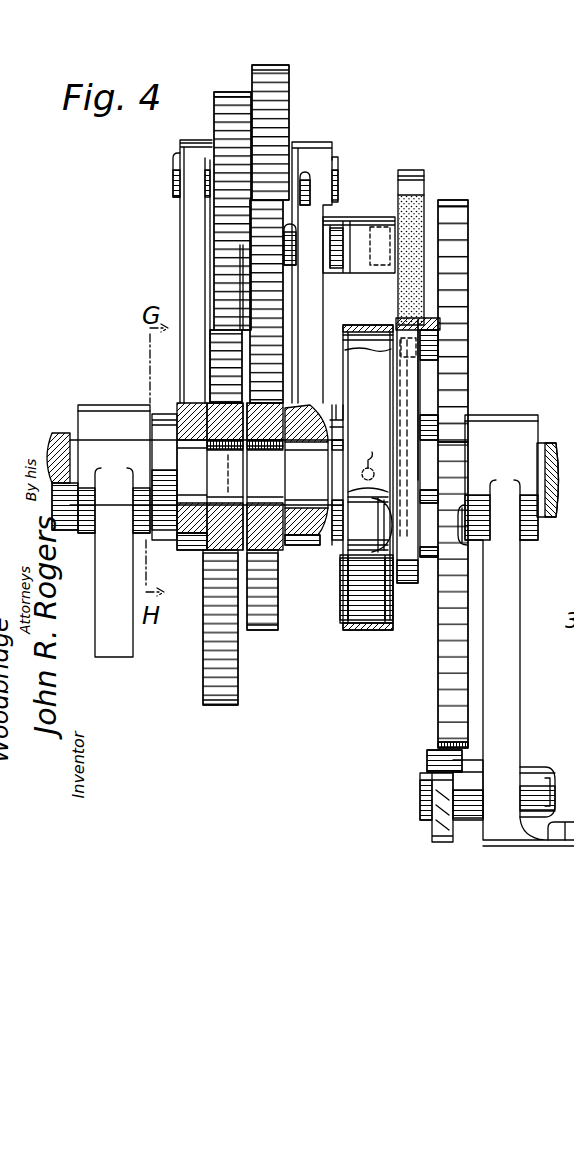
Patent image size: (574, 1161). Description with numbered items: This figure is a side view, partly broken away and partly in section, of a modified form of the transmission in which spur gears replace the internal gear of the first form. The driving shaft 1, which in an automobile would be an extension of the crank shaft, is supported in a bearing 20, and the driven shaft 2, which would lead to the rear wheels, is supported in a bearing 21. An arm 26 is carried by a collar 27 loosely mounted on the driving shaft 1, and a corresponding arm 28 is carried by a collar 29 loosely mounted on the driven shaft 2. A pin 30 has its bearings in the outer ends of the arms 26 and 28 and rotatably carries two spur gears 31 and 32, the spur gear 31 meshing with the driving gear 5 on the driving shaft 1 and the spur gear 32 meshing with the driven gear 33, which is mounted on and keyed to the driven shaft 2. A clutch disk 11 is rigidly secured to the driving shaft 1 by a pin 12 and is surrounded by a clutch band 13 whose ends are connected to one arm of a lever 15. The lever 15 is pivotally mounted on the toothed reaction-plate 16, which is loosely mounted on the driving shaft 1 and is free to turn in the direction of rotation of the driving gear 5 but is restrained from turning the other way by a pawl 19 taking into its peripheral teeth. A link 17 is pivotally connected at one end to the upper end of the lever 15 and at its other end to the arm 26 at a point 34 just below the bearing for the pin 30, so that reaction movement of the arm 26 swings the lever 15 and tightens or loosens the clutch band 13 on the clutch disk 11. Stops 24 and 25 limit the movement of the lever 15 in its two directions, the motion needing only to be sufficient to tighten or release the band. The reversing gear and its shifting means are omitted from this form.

The driving shaft 1 is at (552, 476).
The driven shaft 2 is at (192, 468).
The driving gear 5 is at (272, 613).
The clutch disk 11 is at (360, 628).
The pin 12 is at (373, 456).
The clutch band 13 is at (368, 676).
The lever 15 is at (418, 174).
The reaction-plate 16 is at (466, 262).
The link 17 is at (340, 217).
The pawl 19 is at (432, 766).
The bearing 20 is at (516, 630).
The bearing 21 is at (114, 531).
The stop 24 is at (436, 323).
The stop 25 is at (420, 347).
The arm 26 is at (308, 294).
The collar 27 is at (304, 532).
The arm 28 is at (190, 254).
The collar 29 is at (186, 532).
The pin 30 is at (340, 178).
The spur gear 31 is at (285, 121).
The spur gear 32 is at (226, 99).
The driven gear 33 is at (232, 660).
The point of connection 34 is at (292, 245).